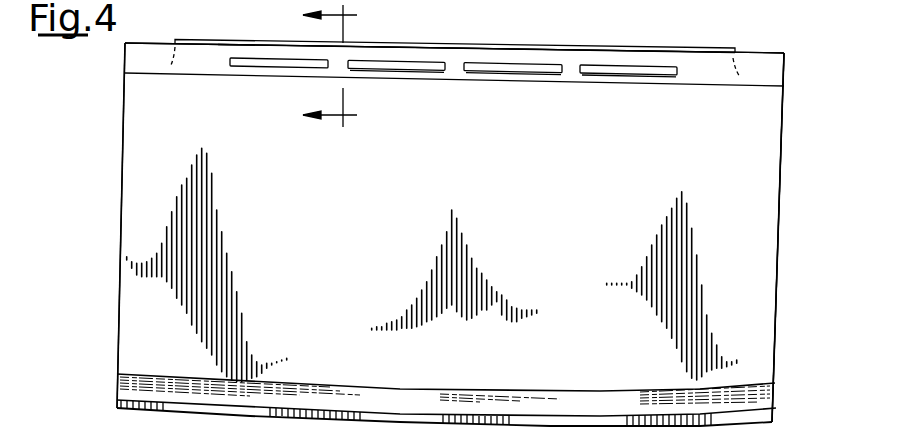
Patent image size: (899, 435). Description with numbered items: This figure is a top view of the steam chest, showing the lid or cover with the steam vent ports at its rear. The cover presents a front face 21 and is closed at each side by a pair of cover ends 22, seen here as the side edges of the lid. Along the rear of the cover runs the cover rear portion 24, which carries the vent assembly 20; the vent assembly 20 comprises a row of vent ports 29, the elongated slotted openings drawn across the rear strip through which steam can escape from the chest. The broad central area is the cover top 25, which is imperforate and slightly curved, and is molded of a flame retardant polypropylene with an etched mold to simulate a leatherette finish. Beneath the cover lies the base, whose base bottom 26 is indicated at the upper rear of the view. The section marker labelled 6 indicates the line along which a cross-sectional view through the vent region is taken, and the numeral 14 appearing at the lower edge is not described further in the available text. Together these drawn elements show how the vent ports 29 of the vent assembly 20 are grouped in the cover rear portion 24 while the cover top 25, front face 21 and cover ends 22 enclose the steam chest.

The panel 14 is at (450, 239).
The vent assembly 20 is at (400, 60).
The front face 21 is at (397, 390).
The cover ends 22 is at (116, 185).
The cover rear portion 24 is at (550, 38).
The cover top 25 is at (767, 128).
The base bottom 26 is at (622, 1).
The vent ports 29 is at (428, 68).
The section line 6 is at (342, 66).